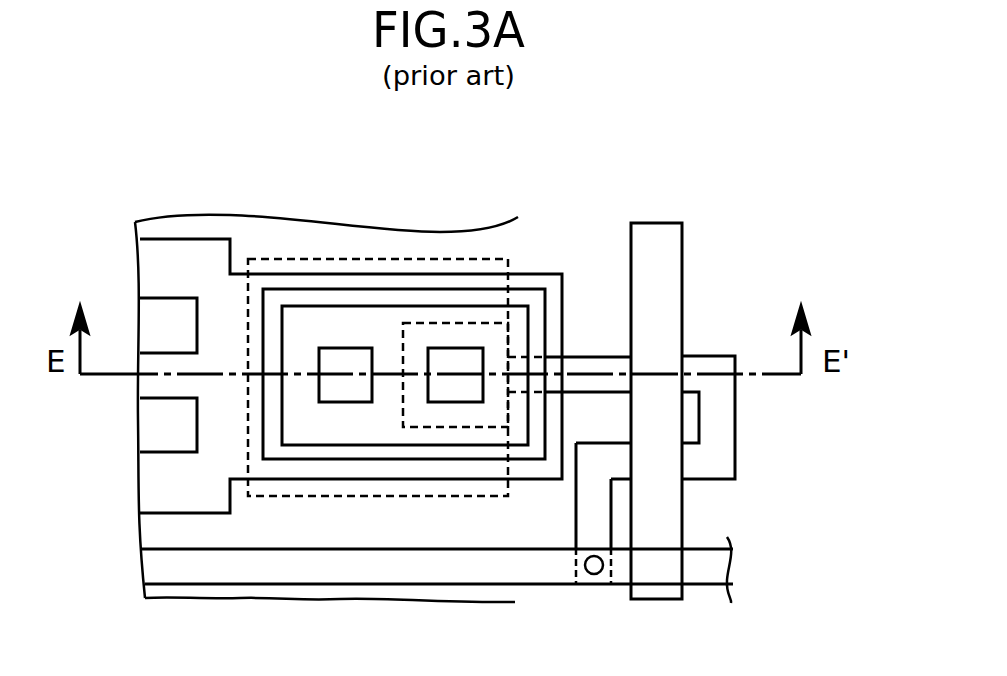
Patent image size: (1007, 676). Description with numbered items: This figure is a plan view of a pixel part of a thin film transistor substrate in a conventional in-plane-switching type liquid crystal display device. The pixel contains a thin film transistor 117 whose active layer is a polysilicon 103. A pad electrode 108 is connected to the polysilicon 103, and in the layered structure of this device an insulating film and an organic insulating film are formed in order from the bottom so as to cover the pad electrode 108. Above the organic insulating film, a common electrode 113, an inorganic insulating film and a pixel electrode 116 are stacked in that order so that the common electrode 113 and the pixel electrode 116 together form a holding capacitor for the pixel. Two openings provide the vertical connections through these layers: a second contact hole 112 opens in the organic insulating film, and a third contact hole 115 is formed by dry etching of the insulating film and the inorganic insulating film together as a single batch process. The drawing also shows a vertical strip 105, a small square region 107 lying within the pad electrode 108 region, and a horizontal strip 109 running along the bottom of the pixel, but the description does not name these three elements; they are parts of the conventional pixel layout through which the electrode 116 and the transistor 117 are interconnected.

The polysilicon 103 is at (727, 453).
The data line 105 is at (683, 240).
The contact hole 107 is at (478, 347).
The pad electrode 108 is at (545, 305).
The gate line 109 is at (705, 567).
The second contact hole 112 is at (528, 445).
The common electrode 113 is at (275, 537).
The third contact hole 115 is at (325, 347).
The pixel electrode 116 is at (143, 486).
The thin film transistor 117 is at (683, 340).